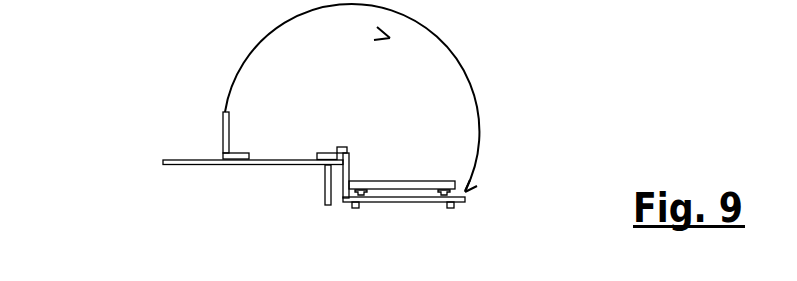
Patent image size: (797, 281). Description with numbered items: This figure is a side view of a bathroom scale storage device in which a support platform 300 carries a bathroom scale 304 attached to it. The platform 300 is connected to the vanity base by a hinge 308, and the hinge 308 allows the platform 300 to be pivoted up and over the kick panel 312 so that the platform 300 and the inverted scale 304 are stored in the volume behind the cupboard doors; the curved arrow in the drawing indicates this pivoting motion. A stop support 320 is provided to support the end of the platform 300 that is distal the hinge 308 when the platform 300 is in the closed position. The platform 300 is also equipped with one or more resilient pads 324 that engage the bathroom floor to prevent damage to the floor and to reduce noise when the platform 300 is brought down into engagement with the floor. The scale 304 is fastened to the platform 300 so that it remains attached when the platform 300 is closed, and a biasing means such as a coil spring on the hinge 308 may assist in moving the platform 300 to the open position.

The support platform 300 is at (337, 194).
The bathroom scale 304 is at (423, 178).
The hinge 308 is at (345, 147).
The kick panel 312 is at (318, 205).
The stop support 320 is at (223, 139).
The resilient pads 324 is at (458, 211).